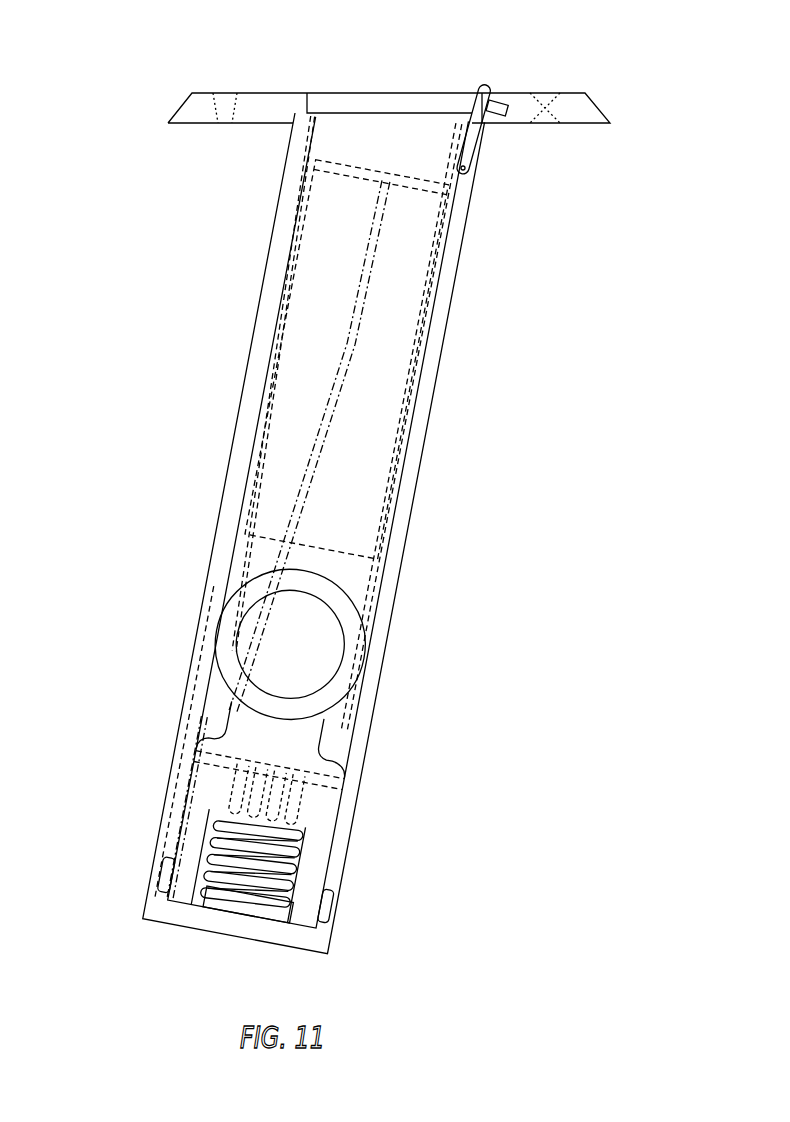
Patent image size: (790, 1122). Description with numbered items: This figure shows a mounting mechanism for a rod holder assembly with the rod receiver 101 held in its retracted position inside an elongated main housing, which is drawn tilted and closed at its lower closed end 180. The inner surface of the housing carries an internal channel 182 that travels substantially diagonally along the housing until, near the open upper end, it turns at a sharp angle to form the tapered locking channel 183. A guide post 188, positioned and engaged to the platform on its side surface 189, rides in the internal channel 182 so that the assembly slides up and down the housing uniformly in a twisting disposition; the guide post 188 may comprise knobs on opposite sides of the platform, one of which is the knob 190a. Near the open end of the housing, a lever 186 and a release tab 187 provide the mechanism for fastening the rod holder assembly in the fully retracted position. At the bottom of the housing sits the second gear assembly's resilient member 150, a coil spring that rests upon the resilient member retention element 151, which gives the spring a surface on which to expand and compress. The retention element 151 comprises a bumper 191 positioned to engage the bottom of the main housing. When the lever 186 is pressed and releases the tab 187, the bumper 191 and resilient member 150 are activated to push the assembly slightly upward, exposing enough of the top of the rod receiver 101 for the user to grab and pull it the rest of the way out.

The rod receiver 101 is at (430, 330).
The resilient member 150 is at (300, 858).
The resilient member retention element 151 is at (240, 818).
The closed end 180 is at (383, 660).
The internal channel 182 is at (328, 455).
The locking channel 183 is at (378, 170).
The lever 186 is at (466, 133).
The release tab 187 is at (466, 130).
The guide post 188 is at (332, 906).
The side surface 189 is at (183, 847).
The knob 190a is at (166, 875).
The bumper 191 is at (240, 917).